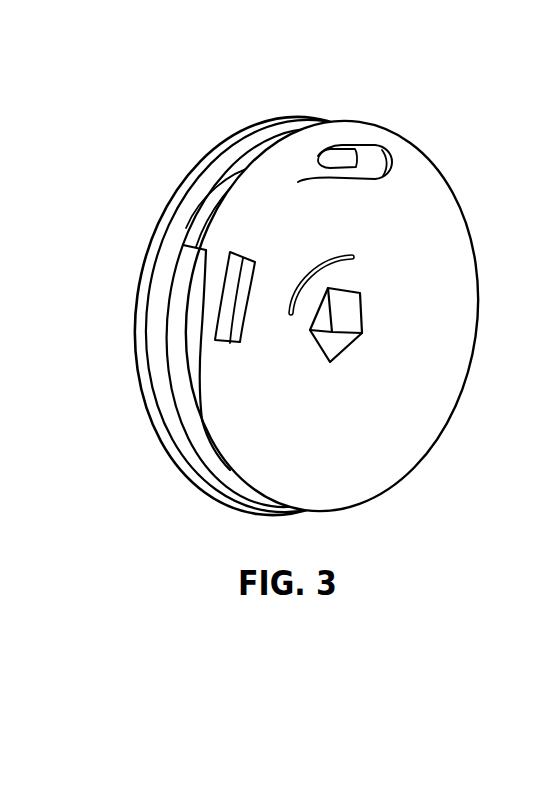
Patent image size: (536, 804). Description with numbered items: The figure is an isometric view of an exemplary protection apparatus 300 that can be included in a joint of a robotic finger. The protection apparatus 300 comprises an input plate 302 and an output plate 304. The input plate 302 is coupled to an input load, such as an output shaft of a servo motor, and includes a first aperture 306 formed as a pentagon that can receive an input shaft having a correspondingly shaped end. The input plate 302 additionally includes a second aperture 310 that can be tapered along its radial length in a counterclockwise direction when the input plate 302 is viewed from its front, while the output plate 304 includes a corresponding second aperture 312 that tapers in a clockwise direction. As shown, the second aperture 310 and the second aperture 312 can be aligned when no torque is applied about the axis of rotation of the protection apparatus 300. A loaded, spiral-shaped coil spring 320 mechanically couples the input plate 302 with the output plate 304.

The protection apparatus 300 is at (392, 65).
The input plate 302 is at (424, 457).
The output plate 304 is at (272, 118).
The first aperture 306 is at (355, 308).
The second aperture 310 is at (353, 141).
The second aperture 312 is at (247, 148).
The coil spring 320 is at (190, 402).